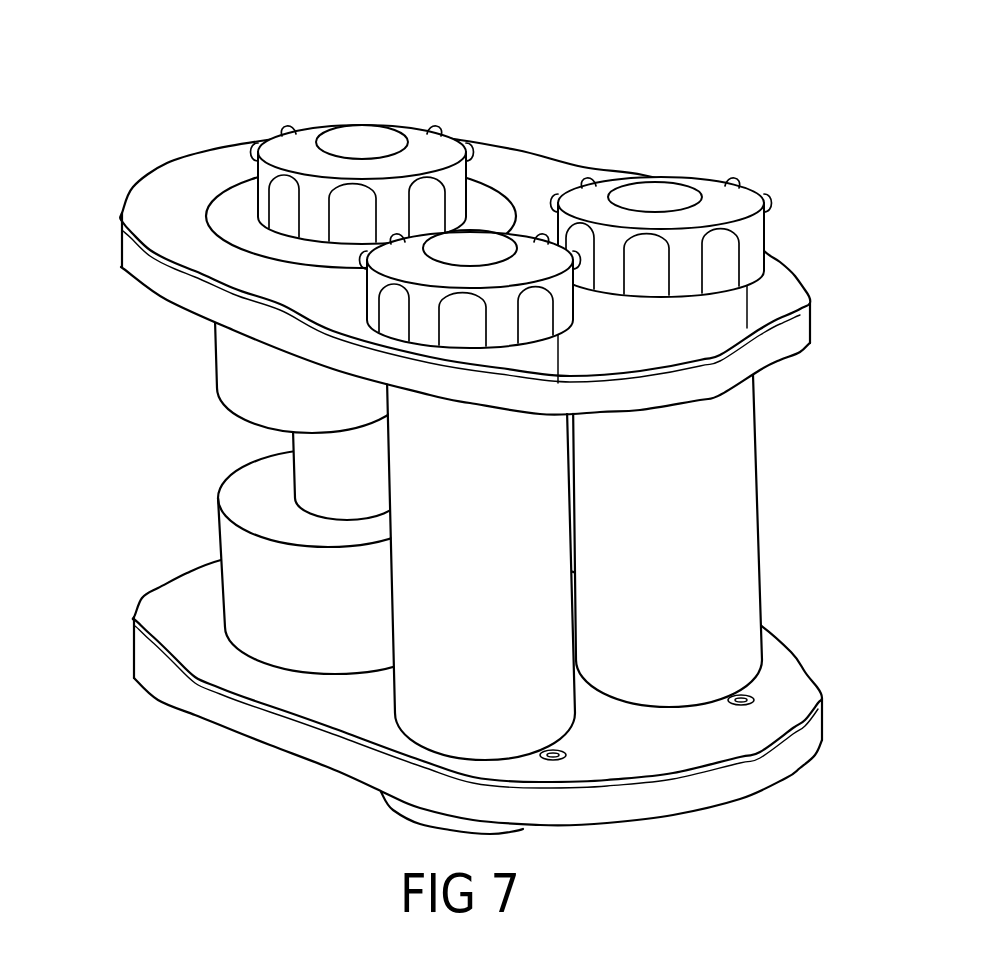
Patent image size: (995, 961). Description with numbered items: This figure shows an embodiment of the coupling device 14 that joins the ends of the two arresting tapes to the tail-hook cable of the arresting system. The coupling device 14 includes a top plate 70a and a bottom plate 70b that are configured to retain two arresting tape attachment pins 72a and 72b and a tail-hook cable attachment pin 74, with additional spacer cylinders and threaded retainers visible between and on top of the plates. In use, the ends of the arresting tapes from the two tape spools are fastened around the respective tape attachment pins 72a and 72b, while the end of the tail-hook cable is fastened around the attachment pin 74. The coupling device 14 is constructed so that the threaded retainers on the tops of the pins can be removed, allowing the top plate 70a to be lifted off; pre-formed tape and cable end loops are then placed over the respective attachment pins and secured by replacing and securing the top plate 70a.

The coupling device 14 is at (450, 423).
The top plate 70a is at (120, 230).
The bottom plate 70b is at (133, 637).
The arresting tape attachment pin 72a is at (688, 192).
The arresting tape attachment pin 72b is at (497, 253).
The tail-hook cable attachment pin 74 is at (343, 140).